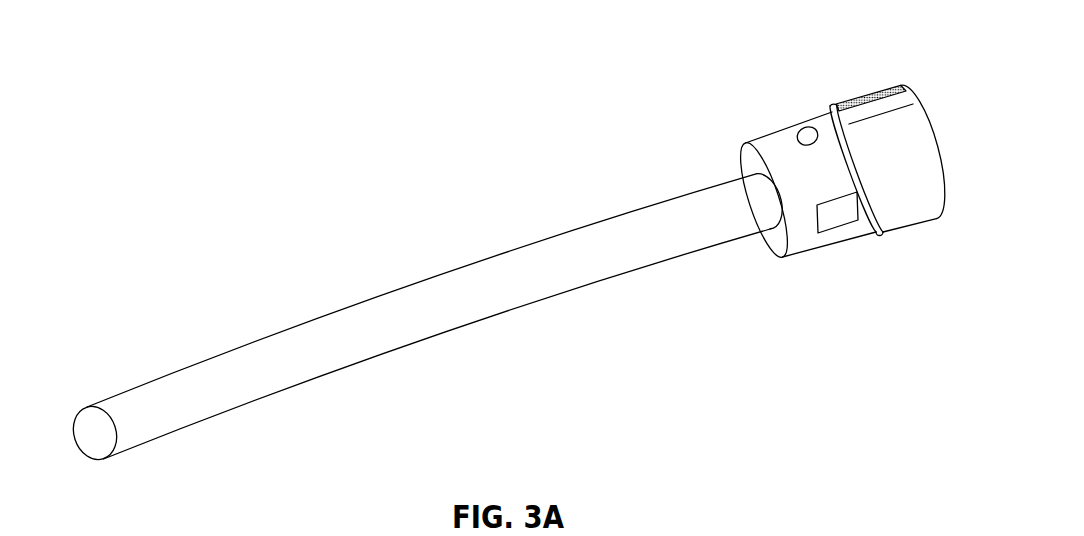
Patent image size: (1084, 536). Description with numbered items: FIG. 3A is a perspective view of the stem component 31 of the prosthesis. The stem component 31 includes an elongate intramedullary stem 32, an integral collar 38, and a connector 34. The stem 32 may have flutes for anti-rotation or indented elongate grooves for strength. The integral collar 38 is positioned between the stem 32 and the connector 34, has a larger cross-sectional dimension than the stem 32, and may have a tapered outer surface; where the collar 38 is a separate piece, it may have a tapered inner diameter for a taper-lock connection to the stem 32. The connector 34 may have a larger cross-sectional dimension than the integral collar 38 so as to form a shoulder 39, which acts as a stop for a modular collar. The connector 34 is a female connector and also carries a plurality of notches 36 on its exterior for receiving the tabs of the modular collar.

The stem component 31 is at (126, 58).
The intramedullary stem 32 is at (414, 283).
The connector 34 is at (921, 243).
The notches 36 is at (870, 105).
The integral collar 38 is at (790, 124).
The shoulder 39 is at (780, 238).